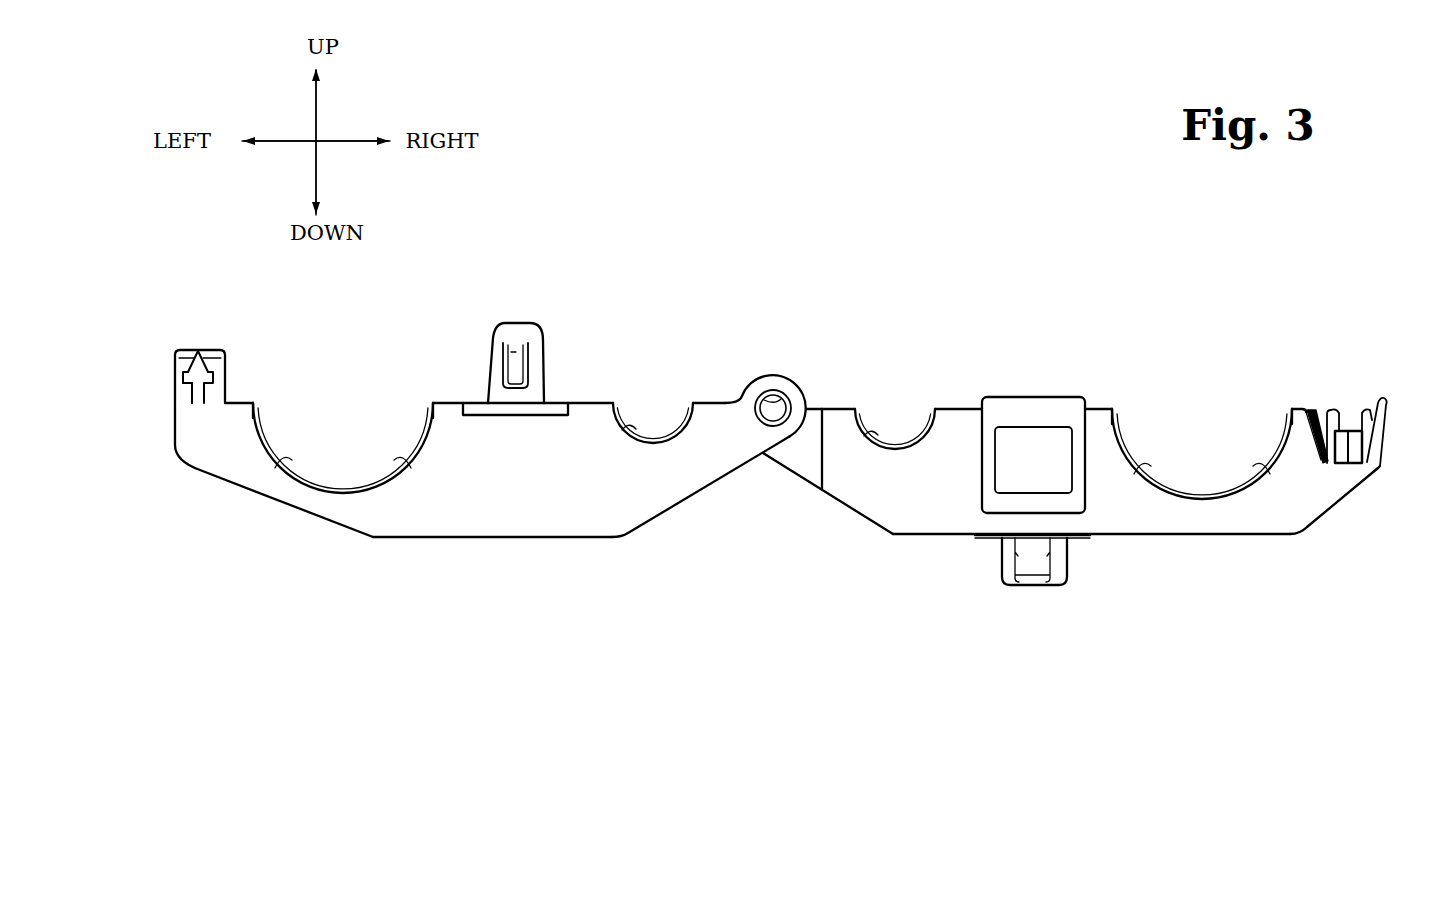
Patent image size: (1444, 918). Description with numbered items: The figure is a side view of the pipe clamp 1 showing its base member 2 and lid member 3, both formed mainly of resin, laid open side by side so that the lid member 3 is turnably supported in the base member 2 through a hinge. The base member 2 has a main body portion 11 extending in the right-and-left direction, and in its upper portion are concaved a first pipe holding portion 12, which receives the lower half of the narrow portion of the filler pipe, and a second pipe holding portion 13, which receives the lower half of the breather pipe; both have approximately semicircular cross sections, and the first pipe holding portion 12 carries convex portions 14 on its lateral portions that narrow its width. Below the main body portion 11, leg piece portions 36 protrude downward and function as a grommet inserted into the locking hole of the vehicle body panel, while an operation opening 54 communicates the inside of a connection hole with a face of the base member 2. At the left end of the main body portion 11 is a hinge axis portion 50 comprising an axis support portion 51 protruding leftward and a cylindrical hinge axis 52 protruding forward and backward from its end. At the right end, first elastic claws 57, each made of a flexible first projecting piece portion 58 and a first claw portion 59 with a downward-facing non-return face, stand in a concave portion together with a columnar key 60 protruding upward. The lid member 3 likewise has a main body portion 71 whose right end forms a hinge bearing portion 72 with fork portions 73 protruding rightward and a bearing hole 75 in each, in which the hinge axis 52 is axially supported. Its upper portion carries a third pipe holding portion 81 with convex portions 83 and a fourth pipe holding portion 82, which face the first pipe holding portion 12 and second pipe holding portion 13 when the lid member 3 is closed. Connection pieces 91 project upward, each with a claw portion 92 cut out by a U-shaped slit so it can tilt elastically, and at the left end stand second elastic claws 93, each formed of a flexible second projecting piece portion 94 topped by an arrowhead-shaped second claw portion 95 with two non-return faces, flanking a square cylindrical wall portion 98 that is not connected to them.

The pipe clamp 1 is at (857, 260).
The base member 2 is at (1107, 360).
The lid member 3 is at (623, 370).
The main body portion 11 is at (1192, 523).
The first pipe holding portion 12 is at (1197, 500).
The second pipe holding portion 13 is at (912, 432).
The convex portions 14 is at (1125, 420).
The leg piece portions 36 is at (1007, 586).
The hinge axis portion 50 is at (828, 400).
The axis support portion 51 is at (805, 485).
The hinge axis 52 is at (770, 400).
The operation opening 54 is at (1036, 428).
The first elastic claws 57 is at (1325, 387).
The first projecting piece portion 58 is at (1328, 448).
The first claw portion 59 is at (1337, 420).
The columnar key 60 is at (1350, 430).
The main body portion 71 is at (510, 525).
The hinge bearing portion 72 is at (742, 378).
The fork portions 73 is at (718, 470).
The bearing hole 75 is at (788, 403).
The third pipe holding portion 81 is at (345, 490).
The fourth pipe holding portion 82 is at (672, 432).
The convex portions 83 is at (268, 414).
The connection pieces 91 is at (492, 358).
The claw portion 92 is at (518, 362).
The second elastic claws 93 is at (203, 348).
The second projecting piece portion 94 is at (192, 395).
The second claw portion 95 is at (186, 370).
The wall portion 98 is at (222, 362).